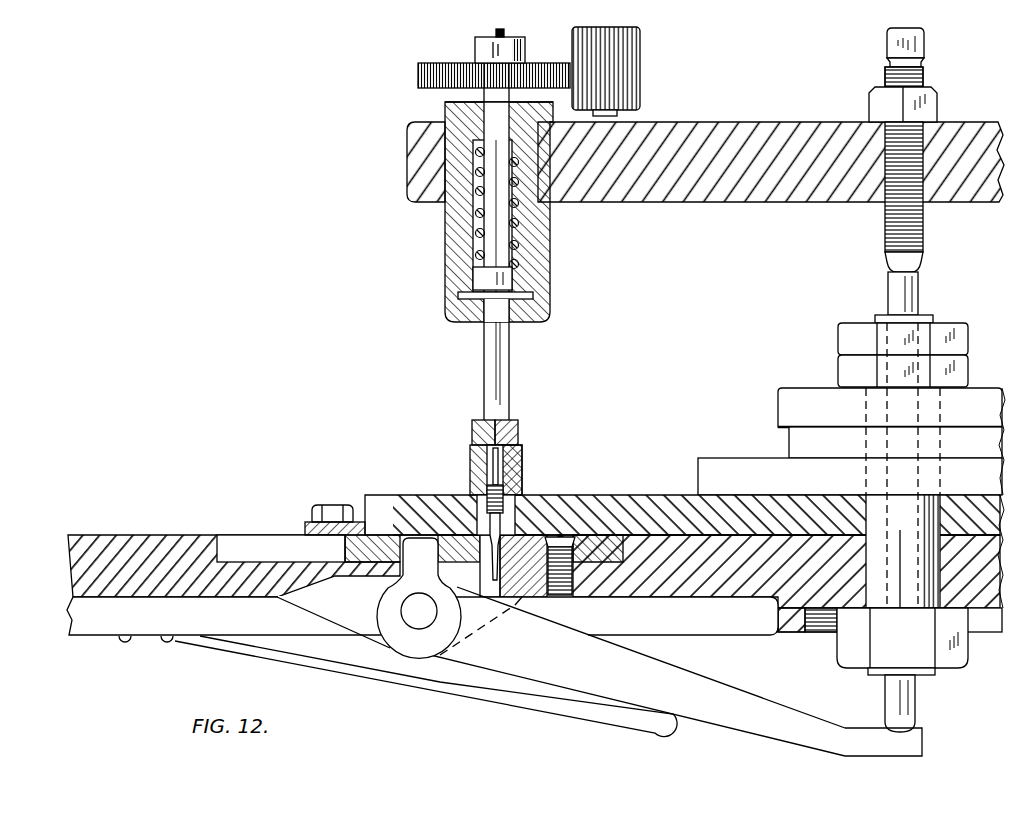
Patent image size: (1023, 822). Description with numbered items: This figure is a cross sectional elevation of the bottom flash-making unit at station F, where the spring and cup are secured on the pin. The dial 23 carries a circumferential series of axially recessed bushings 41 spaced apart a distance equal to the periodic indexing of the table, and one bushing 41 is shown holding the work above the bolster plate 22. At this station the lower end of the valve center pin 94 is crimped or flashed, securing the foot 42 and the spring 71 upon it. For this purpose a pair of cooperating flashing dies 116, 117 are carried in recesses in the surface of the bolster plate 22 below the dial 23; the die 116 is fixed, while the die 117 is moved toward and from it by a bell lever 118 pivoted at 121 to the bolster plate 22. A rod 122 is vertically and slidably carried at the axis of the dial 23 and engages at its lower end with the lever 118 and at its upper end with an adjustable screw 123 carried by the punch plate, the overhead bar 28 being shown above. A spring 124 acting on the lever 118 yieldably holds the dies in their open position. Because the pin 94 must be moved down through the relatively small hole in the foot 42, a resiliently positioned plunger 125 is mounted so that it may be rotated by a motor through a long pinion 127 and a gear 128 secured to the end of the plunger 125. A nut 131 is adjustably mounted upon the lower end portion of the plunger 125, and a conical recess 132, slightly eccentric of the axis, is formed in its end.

The bolster plate 22 is at (173, 534).
The dial 23 is at (636, 495).
The bar 28 is at (737, 203).
The bushing 41 is at (469, 466).
The foot 42 is at (500, 523).
The spring 71 is at (521, 488).
The valve center pin 94 is at (500, 478).
The flashing die 116 is at (607, 565).
The flashing die 117 is at (343, 551).
The bell lever 118 is at (599, 652).
The pivot 121 is at (403, 626).
The rod 122 is at (921, 301).
The adjustable screw 123 is at (885, 228).
The spring 124 is at (595, 722).
The plunger 125 is at (512, 380).
The long pinion 127 is at (640, 76).
The gear 128 is at (418, 80).
The nut 131 is at (521, 441).
The conical recess 132 is at (476, 436).